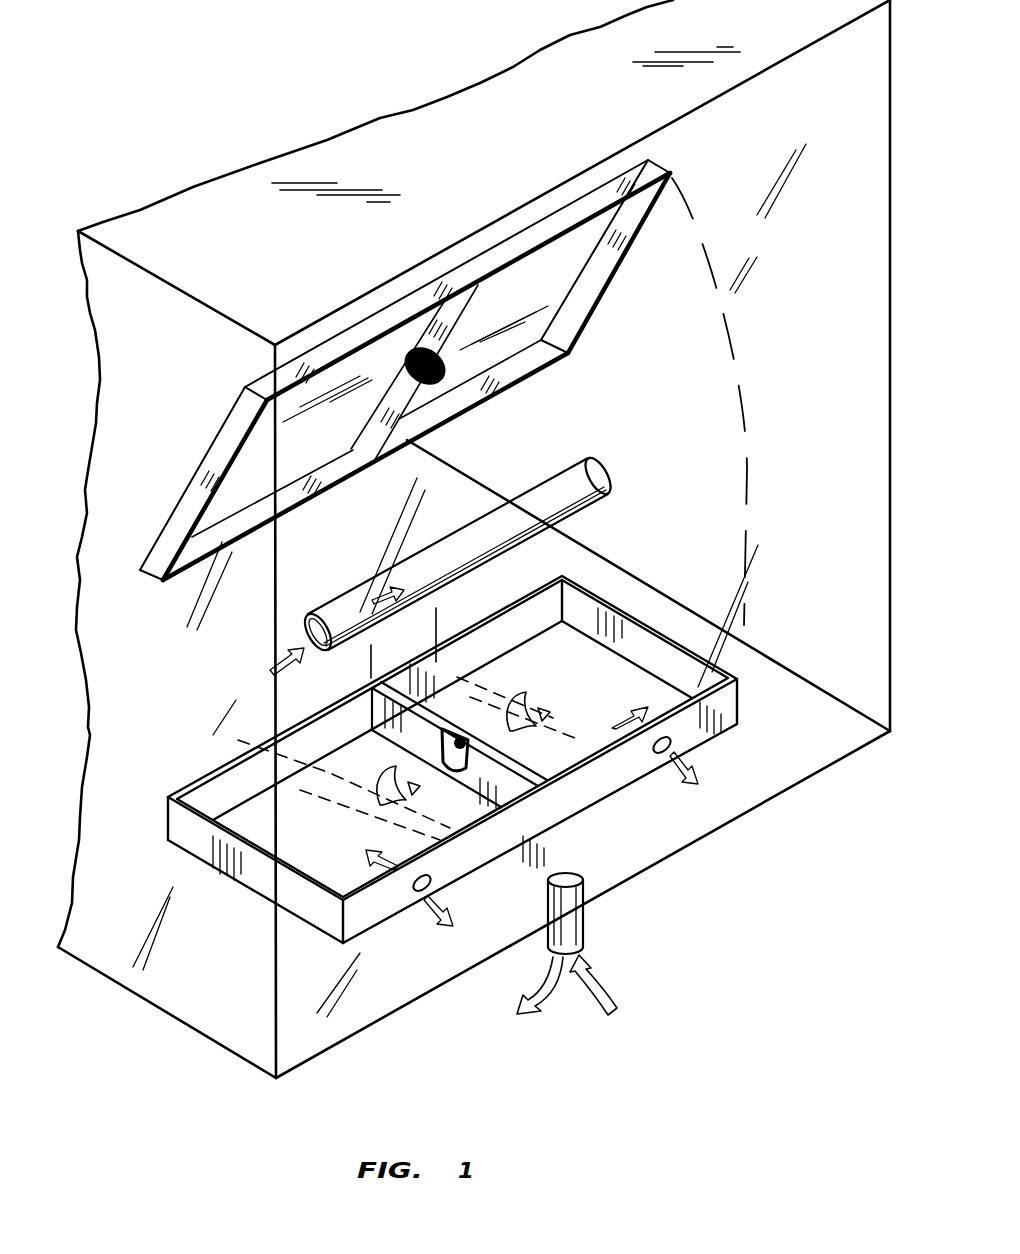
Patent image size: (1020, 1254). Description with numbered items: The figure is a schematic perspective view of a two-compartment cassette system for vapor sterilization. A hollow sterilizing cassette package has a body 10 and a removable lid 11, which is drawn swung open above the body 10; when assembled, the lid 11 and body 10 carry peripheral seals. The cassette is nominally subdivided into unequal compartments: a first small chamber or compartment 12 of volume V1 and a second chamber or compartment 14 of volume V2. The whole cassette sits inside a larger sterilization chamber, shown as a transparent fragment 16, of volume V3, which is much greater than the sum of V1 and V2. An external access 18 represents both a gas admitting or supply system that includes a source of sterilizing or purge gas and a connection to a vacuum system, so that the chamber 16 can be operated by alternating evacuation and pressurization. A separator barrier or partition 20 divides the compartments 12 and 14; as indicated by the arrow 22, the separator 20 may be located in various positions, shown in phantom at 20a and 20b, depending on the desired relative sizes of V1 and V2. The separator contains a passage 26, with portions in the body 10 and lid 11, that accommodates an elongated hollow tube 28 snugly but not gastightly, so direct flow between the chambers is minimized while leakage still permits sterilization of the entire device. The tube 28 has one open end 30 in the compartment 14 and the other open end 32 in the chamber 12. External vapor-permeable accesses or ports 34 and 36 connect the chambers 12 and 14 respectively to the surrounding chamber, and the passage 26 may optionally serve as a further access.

The body 10 is at (744, 671).
The removable lid 11 is at (617, 278).
The first chamber or compartment 12 is at (548, 638).
The second chamber or compartment 14 is at (238, 819).
The sterilization chamber 16 is at (716, 835).
The external access 18 is at (585, 922).
The separator barrier or partition 20 is at (372, 737).
The separator location shown in phantom 20a is at (460, 738).
The separator location shown in phantom 20b is at (324, 769).
The arrow 22 is at (435, 624).
The passage or opening 26 is at (433, 383).
The elongated hollow tube 28 is at (563, 470).
The open end of tube 30 is at (306, 628).
The open end of tube 32 is at (608, 468).
The vapor-permeable access or port 34 is at (674, 746).
The vapor-permeable access or port 36 is at (434, 889).
The volume of first compartment V1 is at (590, 644).
The volume of second compartment V2 is at (303, 752).
The volume of sterilization chamber V3 is at (412, 994).